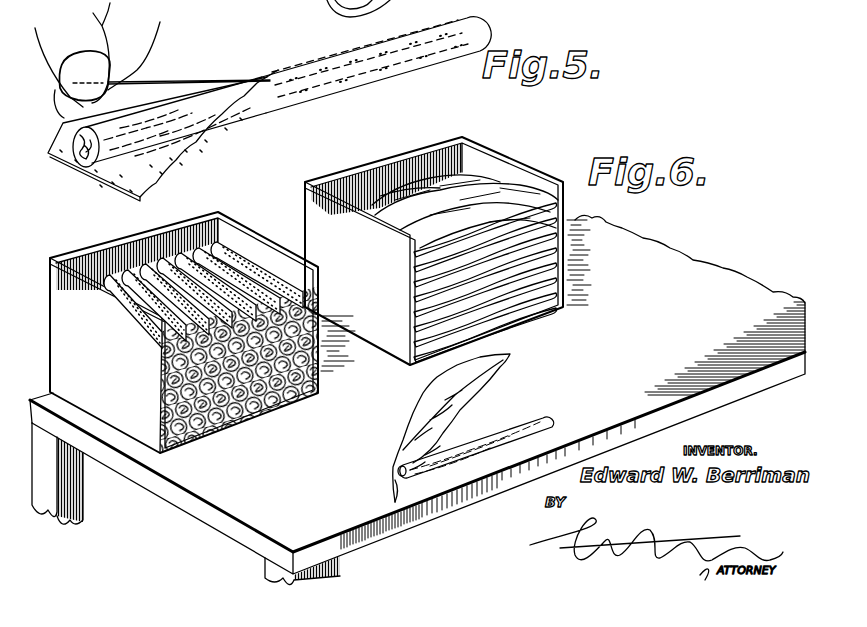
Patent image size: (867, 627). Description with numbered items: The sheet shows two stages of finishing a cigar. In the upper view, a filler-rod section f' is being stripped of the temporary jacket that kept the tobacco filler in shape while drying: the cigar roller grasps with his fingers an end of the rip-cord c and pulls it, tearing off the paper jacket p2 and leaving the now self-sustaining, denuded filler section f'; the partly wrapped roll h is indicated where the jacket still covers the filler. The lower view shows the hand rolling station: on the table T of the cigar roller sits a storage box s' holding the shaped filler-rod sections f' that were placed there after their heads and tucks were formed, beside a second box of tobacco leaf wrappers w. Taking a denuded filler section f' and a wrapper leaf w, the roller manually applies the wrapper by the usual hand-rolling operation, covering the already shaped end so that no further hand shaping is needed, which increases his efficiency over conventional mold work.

In FIG. 5, the rip-cord c is at (188, 82).
In FIG. 5, the filler-rod section f' is at (225, 102).
In FIG. 6, the filler-rod section f' is at (305, 327).
In FIG. 5, the paper jacket p2 is at (202, 147).
In FIG. 5, the wrapped roll h is at (480, 25).
In FIG. 6, the wrapped roll h is at (313, 303).
In FIG. 6, the storage box s' is at (184, 321).
In FIG. 6, the tobacco leaf wrapper w is at (514, 197).
In FIG. 6, the table T is at (187, 511).